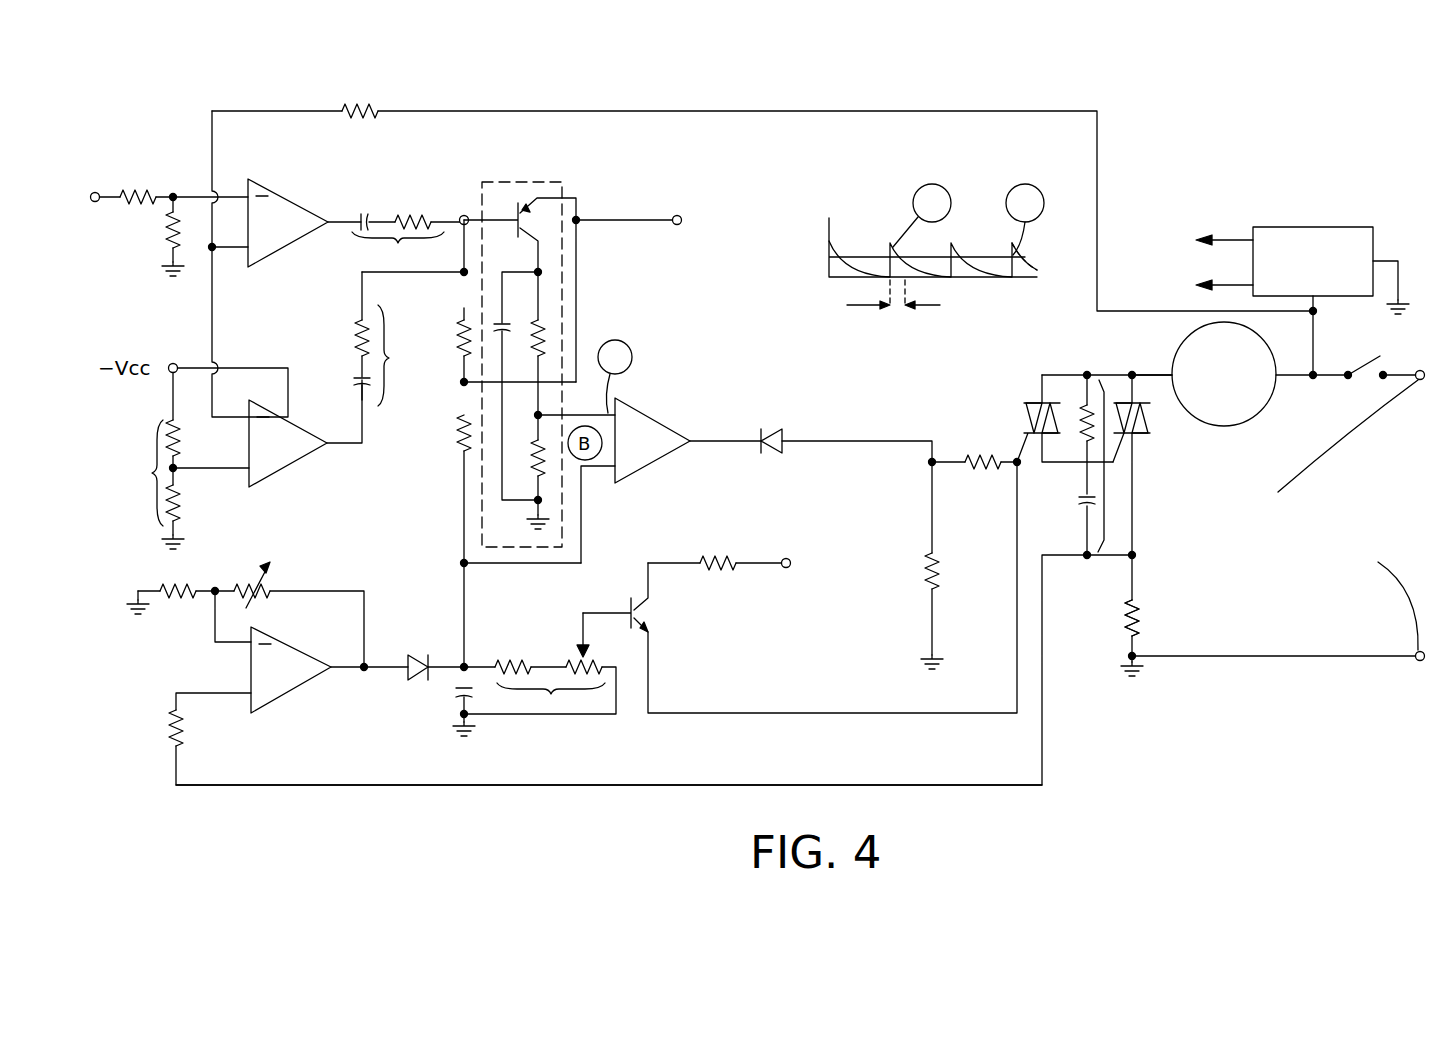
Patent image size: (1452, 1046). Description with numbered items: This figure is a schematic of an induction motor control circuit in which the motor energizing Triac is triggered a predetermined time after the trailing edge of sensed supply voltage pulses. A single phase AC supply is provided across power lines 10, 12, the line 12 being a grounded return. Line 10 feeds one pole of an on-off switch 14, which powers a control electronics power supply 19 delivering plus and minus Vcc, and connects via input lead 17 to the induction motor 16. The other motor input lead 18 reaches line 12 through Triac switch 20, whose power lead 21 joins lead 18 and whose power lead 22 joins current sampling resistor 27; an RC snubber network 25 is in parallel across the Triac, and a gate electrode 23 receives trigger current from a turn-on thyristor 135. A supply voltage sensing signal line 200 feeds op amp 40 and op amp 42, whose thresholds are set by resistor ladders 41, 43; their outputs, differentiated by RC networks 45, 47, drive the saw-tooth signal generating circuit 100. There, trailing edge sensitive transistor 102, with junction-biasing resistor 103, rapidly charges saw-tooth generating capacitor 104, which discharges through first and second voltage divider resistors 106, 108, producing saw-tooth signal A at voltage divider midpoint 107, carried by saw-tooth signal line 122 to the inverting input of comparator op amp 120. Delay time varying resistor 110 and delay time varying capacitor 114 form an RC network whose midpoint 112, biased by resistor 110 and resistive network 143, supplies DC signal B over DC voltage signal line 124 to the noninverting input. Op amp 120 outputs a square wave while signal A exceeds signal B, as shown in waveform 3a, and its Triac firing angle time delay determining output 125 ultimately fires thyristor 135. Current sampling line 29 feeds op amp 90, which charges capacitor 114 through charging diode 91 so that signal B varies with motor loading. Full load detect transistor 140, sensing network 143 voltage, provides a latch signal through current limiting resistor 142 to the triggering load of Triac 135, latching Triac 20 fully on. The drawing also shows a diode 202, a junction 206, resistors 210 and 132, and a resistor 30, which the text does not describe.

The supply voltage sensing signal line 200 is at (708, 111).
The positive pulse wave shaper operational amplifier 40 is at (284, 196).
The positive threshold establishing resistor ladder 41 is at (170, 219).
The pulse differentiating RC coupling network 45 is at (396, 241).
The negative pulse wave shaper operational amplifier 42 is at (305, 426).
The negative threshold establishing resistor ladder 43 is at (148, 461).
The pulse differentiating RC coupling network 47 is at (391, 339).
The saw-tooth signal generating circuit 100 is at (569, 190).
The trailing edge sensitive transistor 102 is at (523, 207).
The junction-biasing resistor 103 is at (463, 325).
The saw-tooth generating capacitor 104 is at (510, 325).
The first voltage divider resistor 106 is at (546, 338).
The voltage divider midpoint 107 is at (534, 413).
The second voltage divider resistor 108 is at (530, 456).
The delay time varying resistor 110 is at (456, 430).
The RC network midpoint 112 is at (464, 565).
The saw-tooth signal line 122 is at (597, 376).
The DC voltage signal line 124 is at (583, 550).
The operational amplifier 120 is at (663, 413).
The Triac firing angle time delay determining output 125 is at (693, 443).
The diode 202 is at (775, 428).
The junction line 206 is at (932, 505).
The resistor 210 is at (924, 566).
The gate resistor 132 is at (965, 470).
The turn-on thyristor 135 is at (1030, 415).
The gate electrode 23 is at (1064, 468).
The Triac switch 20 is at (1154, 423).
The RC snubber network 25 is at (1107, 476).
The power lead 22 is at (1137, 515).
The current sampling resistor 27 is at (1145, 612).
The power line 12 is at (1306, 660).
The power lead 21 is at (1113, 384).
The input lead 18 is at (1157, 352).
The induction motor 16 is at (1257, 343).
The input lead 17 is at (1297, 378).
The on-off switch 14 is at (1370, 352).
The power line 10 is at (1400, 371).
The control electronics power supply 19 is at (1322, 227).
The waveform 3a is at (925, 251).
The operational amplifier 90 is at (289, 650).
The resistor 30 is at (178, 734).
The charging diode 91 is at (408, 662).
The delay time varying capacitor 114 is at (458, 690).
The resistive network 143 is at (550, 702).
The current limiting resistor 142 is at (736, 580).
The full load detect transistor 140 is at (645, 614).
The current sampling line 29 is at (1022, 787).